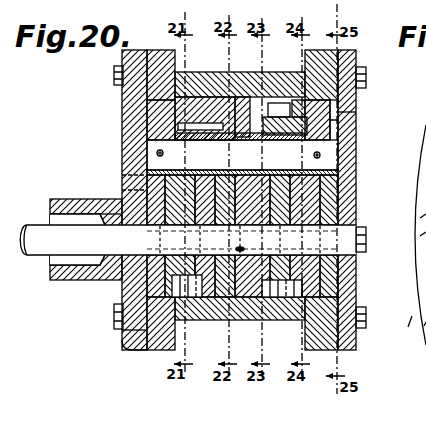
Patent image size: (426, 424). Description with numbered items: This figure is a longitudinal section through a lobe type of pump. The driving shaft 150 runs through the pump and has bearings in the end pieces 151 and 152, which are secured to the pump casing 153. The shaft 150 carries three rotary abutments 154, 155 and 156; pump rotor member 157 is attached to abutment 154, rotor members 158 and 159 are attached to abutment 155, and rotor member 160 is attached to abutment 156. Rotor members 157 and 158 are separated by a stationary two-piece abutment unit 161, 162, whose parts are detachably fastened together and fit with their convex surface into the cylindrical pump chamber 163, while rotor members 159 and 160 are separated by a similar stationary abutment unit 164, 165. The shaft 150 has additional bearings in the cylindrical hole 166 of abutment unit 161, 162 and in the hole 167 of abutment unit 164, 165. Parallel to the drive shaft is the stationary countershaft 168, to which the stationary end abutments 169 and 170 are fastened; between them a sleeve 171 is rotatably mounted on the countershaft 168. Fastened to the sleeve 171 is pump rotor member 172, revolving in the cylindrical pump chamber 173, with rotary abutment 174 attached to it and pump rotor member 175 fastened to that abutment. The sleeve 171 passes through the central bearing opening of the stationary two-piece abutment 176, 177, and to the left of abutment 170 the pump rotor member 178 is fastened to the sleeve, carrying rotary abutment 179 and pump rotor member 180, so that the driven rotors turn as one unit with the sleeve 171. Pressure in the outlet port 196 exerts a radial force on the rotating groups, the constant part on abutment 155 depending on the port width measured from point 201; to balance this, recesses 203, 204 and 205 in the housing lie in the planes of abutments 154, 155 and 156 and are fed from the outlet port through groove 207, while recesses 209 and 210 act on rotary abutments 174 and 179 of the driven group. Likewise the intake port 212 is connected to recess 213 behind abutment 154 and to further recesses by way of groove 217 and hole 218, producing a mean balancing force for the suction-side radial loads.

The driving shaft 150 is at (72, 282).
The end piece 151 is at (130, 113).
The end piece 152 is at (358, 140).
The pump casing 153 is at (157, 50).
The rotary abutment 154 is at (117, 314).
The rotary abutment 155 is at (222, 322).
The rotary abutment 156 is at (356, 285).
The pump rotor member 157 is at (145, 352).
The pump rotor member 158 is at (228, 322).
The pump rotor member 159 is at (262, 325).
The pump rotor member 160 is at (312, 320).
The stationary abutment part 161 is at (214, 320).
The stationary abutment part 162 is at (150, 232).
The cylindrical pump chamber 163 is at (302, 304).
The stationary abutment part 164 is at (345, 269).
The stationary abutment part 165 is at (318, 213).
The cylindrical hole 166 is at (119, 283).
The hole 167 is at (358, 249).
The stationary countershaft 168 is at (147, 141).
The stationary end abutment 169 is at (122, 94).
The stationary end abutment 170 is at (333, 131).
The sleeve 171 is at (210, 152).
The pump rotor member 172 is at (190, 72).
The cylindrical pump chamber 173 is at (306, 97).
The rotary abutment 174 is at (208, 97).
The pump rotor member 175 is at (238, 108).
The stationary abutment part 176 is at (257, 118).
The stationary abutment part 177 is at (262, 166).
The pump rotor member 178 is at (347, 117).
The rotary abutment 179 is at (340, 182).
The pump rotor member 180 is at (296, 100).
The outlet port 196 is at (420, 218).
The port width reference point 201 is at (420, 236).
The recess 203 is at (114, 308).
The recess 204 is at (264, 318).
The recess 205 is at (367, 318).
The groove 207 is at (367, 79).
The recess 209 is at (122, 175).
The recess 210 is at (283, 112).
The intake port 212 is at (122, 190).
The recess 213 is at (418, 307).
The groove 217 is at (119, 330).
The hole 218 is at (412, 332).